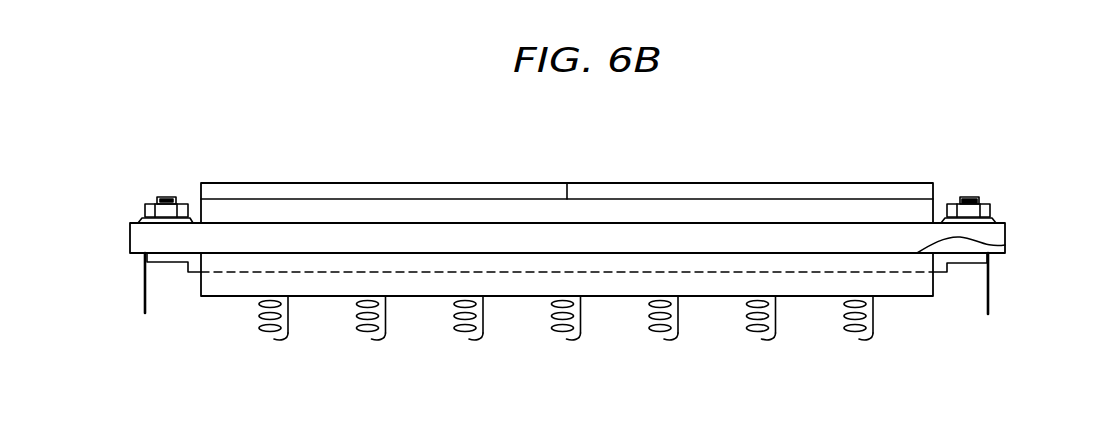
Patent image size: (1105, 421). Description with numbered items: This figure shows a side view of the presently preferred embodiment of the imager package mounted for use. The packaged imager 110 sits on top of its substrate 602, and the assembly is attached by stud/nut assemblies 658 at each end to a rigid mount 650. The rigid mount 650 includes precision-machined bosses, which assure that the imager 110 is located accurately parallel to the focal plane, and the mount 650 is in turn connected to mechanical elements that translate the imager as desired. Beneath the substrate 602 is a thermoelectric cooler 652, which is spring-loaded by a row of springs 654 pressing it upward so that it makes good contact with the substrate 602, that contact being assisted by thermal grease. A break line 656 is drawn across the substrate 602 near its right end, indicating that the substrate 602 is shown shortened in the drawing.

The heater assembly 110 is at (798, 183).
The mounting plate 602 is at (130, 238).
The support post 650 is at (145, 285).
The base block 652 is at (933, 287).
The spring 654 is at (261, 334).
The break line 656 is at (1005, 246).
The bolt 658 is at (147, 203).